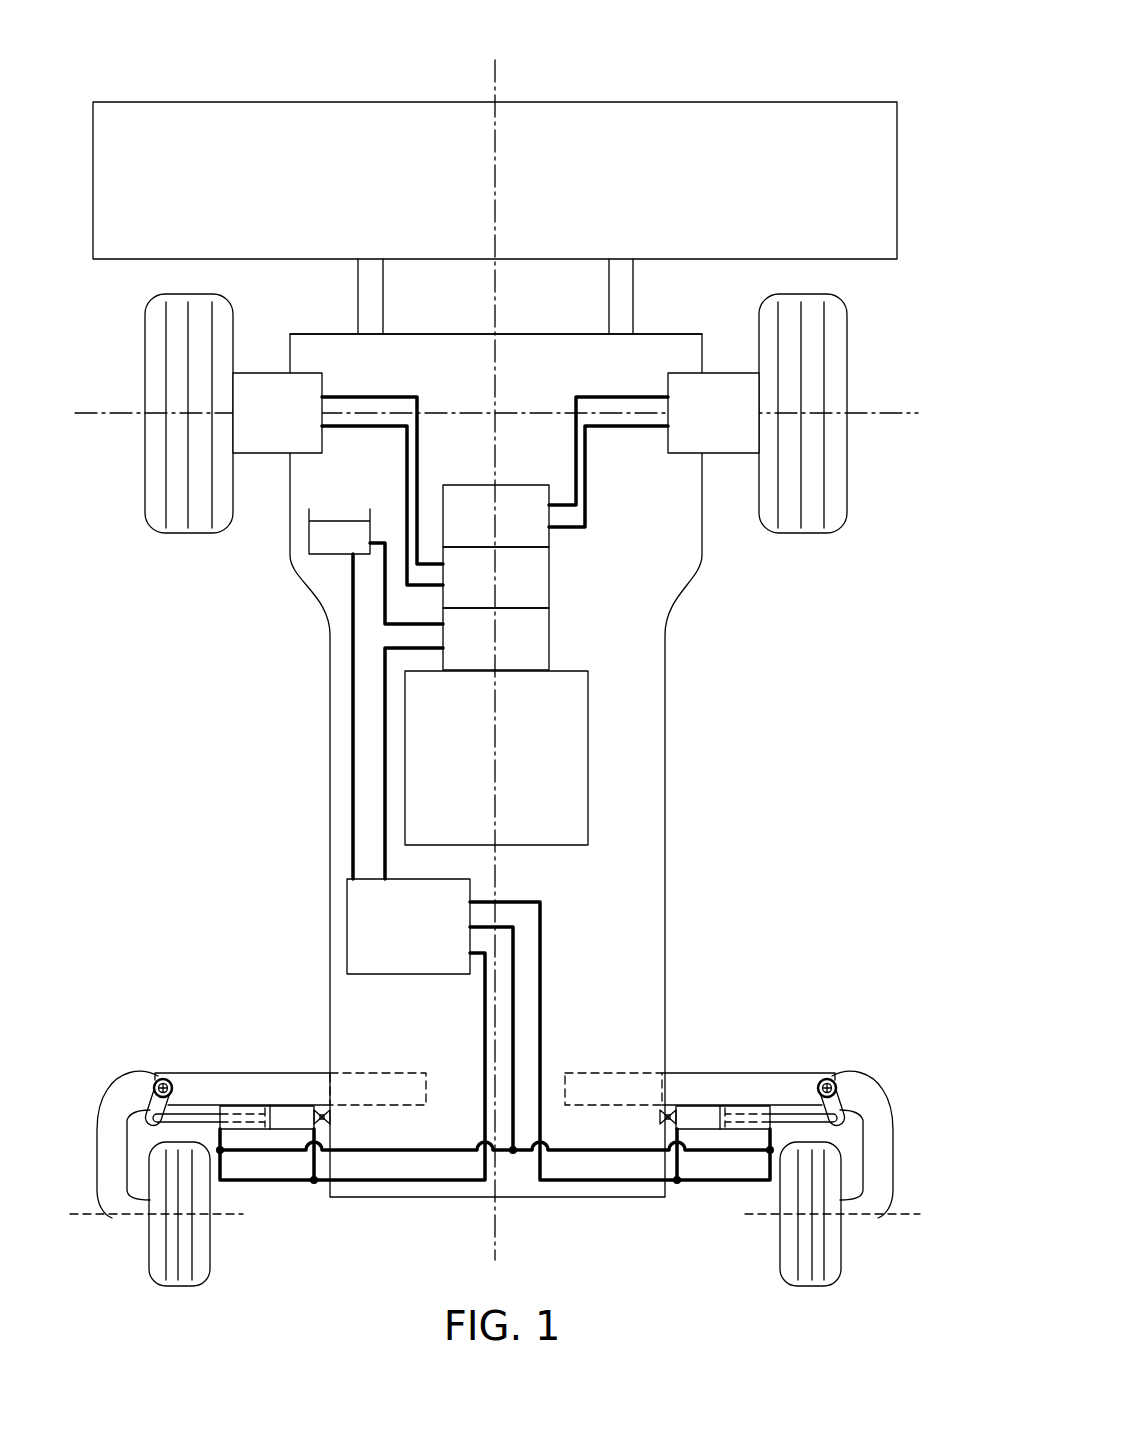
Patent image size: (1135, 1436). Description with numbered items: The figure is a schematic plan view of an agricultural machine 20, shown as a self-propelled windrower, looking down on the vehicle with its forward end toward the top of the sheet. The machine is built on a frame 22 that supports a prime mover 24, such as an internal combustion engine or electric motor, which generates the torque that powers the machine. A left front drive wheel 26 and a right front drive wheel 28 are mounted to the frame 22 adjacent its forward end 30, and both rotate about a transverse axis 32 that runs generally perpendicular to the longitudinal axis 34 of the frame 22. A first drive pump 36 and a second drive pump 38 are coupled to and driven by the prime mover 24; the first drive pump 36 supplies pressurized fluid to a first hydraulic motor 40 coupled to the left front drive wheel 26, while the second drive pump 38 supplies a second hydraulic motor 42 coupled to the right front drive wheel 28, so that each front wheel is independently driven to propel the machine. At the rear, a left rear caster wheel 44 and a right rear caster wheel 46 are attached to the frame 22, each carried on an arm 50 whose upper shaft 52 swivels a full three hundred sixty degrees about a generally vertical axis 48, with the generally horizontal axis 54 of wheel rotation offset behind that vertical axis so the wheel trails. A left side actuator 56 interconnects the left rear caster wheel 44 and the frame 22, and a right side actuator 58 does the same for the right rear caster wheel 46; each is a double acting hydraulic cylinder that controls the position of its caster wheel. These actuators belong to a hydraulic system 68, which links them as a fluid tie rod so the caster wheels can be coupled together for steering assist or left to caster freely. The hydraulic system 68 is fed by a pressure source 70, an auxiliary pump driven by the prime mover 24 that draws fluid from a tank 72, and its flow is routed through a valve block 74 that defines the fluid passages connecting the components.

The agricultural machine 20 is at (713, 55).
The frame 22 is at (662, 797).
The prime mover 24 is at (531, 768).
The left front drive wheel 26 is at (145, 370).
The right front drive wheel 28 is at (847, 370).
The forward end 30 is at (515, 334).
The transverse axis 32 is at (903, 413).
The longitudinal axis 34 is at (497, 188).
The first drive pump 36 is at (508, 592).
The second drive pump 38 is at (508, 531).
The first hydraulic motor 40 is at (258, 455).
The second hydraulic motor 42 is at (732, 455).
The left rear caster wheel 44 is at (152, 1285).
The right rear caster wheel 46 is at (838, 1285).
The generally vertical axis 48 is at (158, 1078).
The arm 50 is at (105, 1160).
The upper shaft 52 is at (168, 1080).
The generally horizontal axis 54 is at (85, 1208).
The left side actuator 56 is at (290, 1118).
The right side actuator 58 is at (702, 1118).
The hydraulic system 68 is at (571, 983).
The pressure source 70 is at (508, 654).
The tank 72 is at (320, 555).
The valve block 74 is at (394, 941).